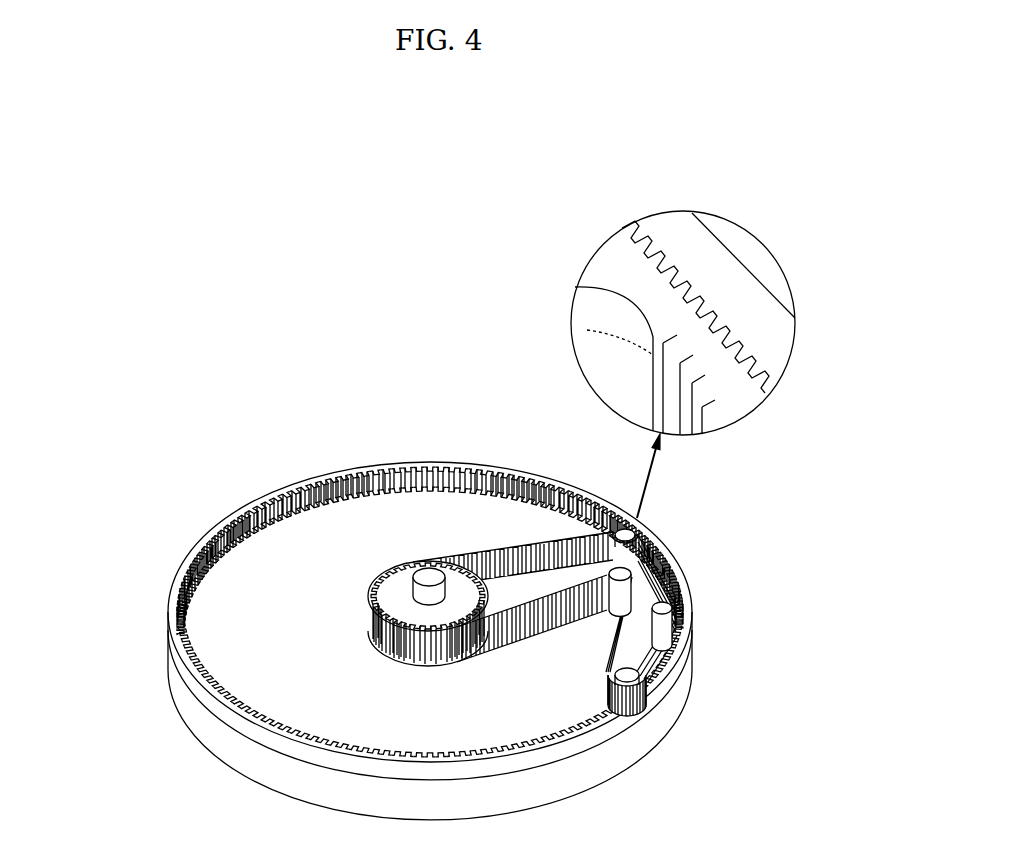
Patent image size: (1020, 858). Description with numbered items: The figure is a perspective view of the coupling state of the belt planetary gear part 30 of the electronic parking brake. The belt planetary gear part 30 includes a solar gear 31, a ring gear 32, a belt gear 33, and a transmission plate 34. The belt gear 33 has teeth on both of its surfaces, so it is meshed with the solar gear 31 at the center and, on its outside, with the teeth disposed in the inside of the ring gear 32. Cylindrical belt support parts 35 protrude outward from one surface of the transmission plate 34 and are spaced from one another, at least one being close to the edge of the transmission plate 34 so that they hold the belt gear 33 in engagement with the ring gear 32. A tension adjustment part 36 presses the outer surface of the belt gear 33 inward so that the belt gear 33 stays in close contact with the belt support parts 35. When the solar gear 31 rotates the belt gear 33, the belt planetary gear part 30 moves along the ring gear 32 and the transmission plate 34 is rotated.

The belt planetary gear part 30 is at (435, 487).
The solar gear 31 is at (398, 582).
The ring gear 32 is at (252, 502).
The belt gear 33 is at (500, 553).
The transmission plate 34 is at (188, 712).
The belt support part 35 is at (665, 606).
The tension adjustment part 36 is at (612, 606).